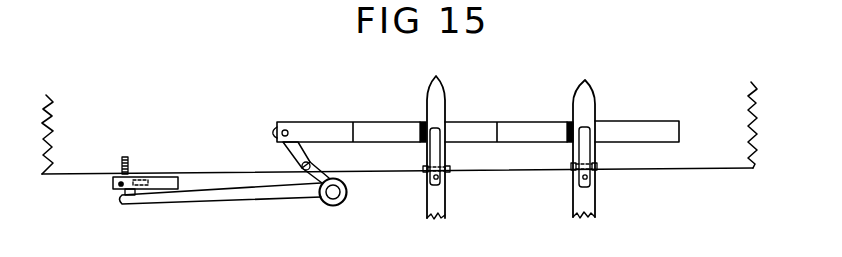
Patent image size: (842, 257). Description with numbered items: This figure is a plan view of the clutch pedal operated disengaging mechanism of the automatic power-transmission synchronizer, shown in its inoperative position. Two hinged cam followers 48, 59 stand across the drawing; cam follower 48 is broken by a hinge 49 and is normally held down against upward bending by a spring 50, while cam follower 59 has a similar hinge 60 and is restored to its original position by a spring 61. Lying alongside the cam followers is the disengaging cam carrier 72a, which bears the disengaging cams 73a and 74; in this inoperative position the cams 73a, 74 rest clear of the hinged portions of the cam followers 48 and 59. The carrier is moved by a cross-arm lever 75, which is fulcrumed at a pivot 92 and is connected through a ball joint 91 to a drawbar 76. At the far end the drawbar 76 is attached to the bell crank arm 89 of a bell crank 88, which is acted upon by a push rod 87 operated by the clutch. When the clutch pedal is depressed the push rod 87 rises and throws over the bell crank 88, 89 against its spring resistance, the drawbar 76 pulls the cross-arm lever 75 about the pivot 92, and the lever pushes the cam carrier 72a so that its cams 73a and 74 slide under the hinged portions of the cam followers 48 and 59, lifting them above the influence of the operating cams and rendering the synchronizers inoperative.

The cam follower 48 is at (445, 210).
The hinge 49 is at (450, 169).
The spring 50 is at (434, 152).
The cam follower 59 is at (595, 207).
The hinge 60 is at (597, 167).
The spring 61 is at (583, 150).
The disengaging cam carrier 72a is at (655, 132).
The disengaging cam 73a is at (362, 132).
The disengaging cam 74 is at (518, 133).
The cross-arm lever 75 is at (290, 149).
The drawbar 76 is at (247, 195).
The push rod 87 is at (145, 178).
The bell crank 88 is at (172, 182).
The bell crank arm 89 is at (115, 186).
The ball joint 91 is at (335, 206).
The pivot 92 is at (313, 163).